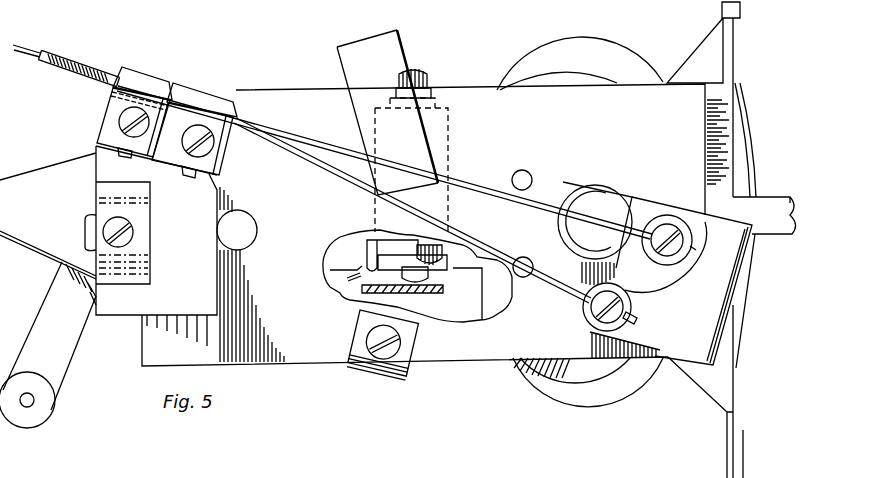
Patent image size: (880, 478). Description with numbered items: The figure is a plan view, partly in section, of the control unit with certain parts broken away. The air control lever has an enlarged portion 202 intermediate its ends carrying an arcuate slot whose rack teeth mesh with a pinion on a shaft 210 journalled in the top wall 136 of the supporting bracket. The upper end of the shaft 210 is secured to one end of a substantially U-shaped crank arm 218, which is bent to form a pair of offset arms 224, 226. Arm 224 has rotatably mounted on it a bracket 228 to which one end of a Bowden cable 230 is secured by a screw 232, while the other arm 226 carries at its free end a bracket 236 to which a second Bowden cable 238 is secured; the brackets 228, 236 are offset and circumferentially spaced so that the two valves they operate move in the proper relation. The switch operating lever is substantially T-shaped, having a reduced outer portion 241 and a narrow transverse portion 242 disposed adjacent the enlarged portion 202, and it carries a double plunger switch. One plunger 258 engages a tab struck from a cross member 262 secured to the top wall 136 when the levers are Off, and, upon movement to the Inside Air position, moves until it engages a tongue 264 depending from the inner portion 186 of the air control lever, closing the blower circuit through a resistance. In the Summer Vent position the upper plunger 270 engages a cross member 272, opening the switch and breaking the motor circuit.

The top wall 136 is at (472, 97).
The inner portion 186 is at (793, 236).
The enlarged portion 202 is at (617, 390).
The shaft 210 is at (597, 195).
The crank arm 218 is at (694, 340).
The arm 224 is at (630, 258).
The arm 226 is at (637, 334).
The bracket 228 is at (665, 224).
The Bowden cable 230 is at (484, 188).
The screw 232 is at (648, 232).
The bracket 236 is at (631, 305).
The Bowden cable 238 is at (344, 182).
The reduced outer portion 241 is at (764, 207).
The transverse portion 242 is at (106, 106).
The plunger 258 is at (440, 277).
The cross member 262 is at (408, 376).
The tongue 264 is at (340, 296).
The upper plunger 270 is at (414, 70).
The cross member 272 is at (336, 47).